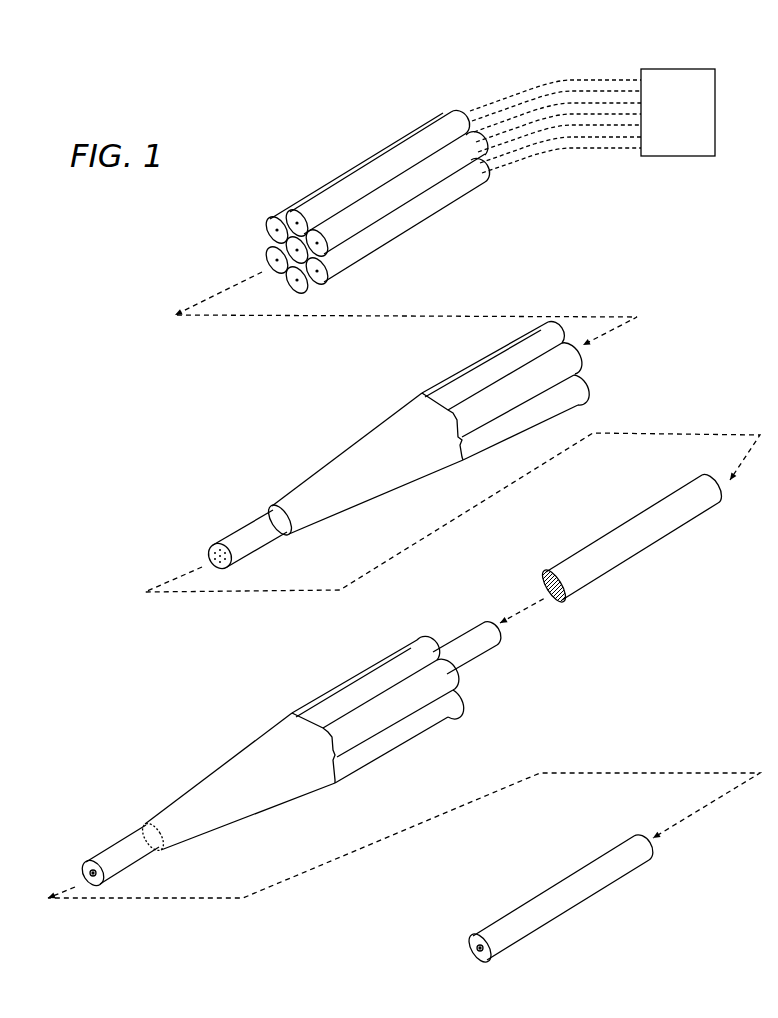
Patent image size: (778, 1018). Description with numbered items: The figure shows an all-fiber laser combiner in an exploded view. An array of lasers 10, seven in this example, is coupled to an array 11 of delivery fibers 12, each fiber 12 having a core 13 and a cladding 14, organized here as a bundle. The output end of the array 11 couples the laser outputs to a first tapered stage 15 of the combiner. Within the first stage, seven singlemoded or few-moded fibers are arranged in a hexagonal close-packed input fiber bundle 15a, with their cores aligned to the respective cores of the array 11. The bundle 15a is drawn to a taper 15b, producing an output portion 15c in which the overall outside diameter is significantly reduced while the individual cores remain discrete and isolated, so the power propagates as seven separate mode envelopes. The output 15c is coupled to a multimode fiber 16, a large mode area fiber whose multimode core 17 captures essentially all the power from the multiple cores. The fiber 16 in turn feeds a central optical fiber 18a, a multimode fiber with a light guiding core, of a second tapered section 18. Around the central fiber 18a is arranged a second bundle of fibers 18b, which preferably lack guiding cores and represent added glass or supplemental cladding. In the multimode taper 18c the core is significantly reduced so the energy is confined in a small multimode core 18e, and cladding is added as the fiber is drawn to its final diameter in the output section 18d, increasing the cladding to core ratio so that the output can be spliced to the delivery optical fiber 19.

The lasers 10 is at (678, 68).
The array of delivery fibers 11 is at (420, 186).
The delivery fiber 12 is at (403, 137).
The core 13 is at (270, 251).
The cladding 14 is at (293, 210).
The first tapered stage 15 is at (373, 447).
The input fiber bundle 15a is at (463, 370).
The taper 15b is at (390, 418).
The output of the first tapered section 15c is at (245, 527).
The multimode fiber 16 is at (612, 565).
The multimode core 17 is at (543, 578).
The second tapered section 18 is at (288, 756).
The central optical fiber 18a is at (475, 658).
The second bundle of fibers 18b is at (378, 709).
The multimode taper 18c is at (250, 743).
The output section 18d is at (137, 861).
The small multimode core 18e is at (90, 871).
The delivery optical fiber 19 is at (590, 883).